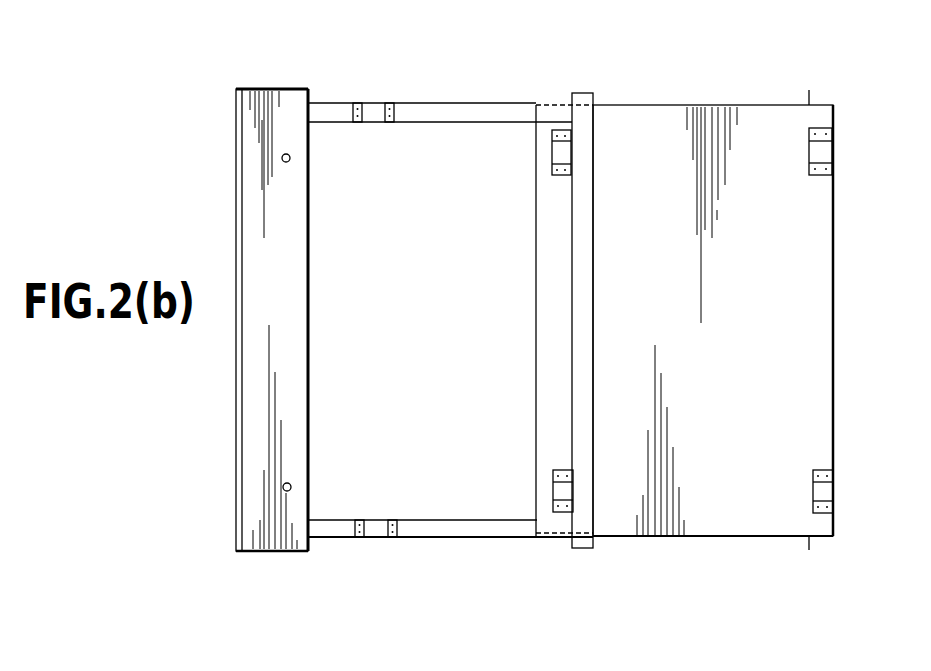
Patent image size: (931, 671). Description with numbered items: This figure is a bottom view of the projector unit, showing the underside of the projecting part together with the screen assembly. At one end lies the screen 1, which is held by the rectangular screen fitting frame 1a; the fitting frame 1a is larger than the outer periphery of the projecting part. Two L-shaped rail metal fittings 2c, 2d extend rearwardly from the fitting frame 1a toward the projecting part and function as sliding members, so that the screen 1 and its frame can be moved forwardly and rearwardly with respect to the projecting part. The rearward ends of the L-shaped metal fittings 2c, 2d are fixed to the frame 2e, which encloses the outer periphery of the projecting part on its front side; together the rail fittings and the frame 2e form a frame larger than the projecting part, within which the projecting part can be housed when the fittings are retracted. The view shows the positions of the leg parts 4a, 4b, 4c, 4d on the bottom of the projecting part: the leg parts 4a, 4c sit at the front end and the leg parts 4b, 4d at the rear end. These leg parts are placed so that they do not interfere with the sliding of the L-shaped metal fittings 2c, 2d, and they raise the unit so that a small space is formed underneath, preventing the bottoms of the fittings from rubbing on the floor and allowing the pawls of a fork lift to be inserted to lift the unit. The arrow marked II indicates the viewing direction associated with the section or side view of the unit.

The screen 1 is at (238, 187).
The screen fitting frame 1a is at (279, 107).
The L-shaped rail metal fitting 2c is at (340, 110).
The L-shaped rail metal fitting 2d is at (463, 528).
The frame 2e is at (585, 318).
The leg part 4a is at (565, 150).
The leg part 4b is at (817, 148).
The leg part 4c is at (567, 490).
The leg part 4d is at (817, 487).
The section line indicator II is at (254, 570).